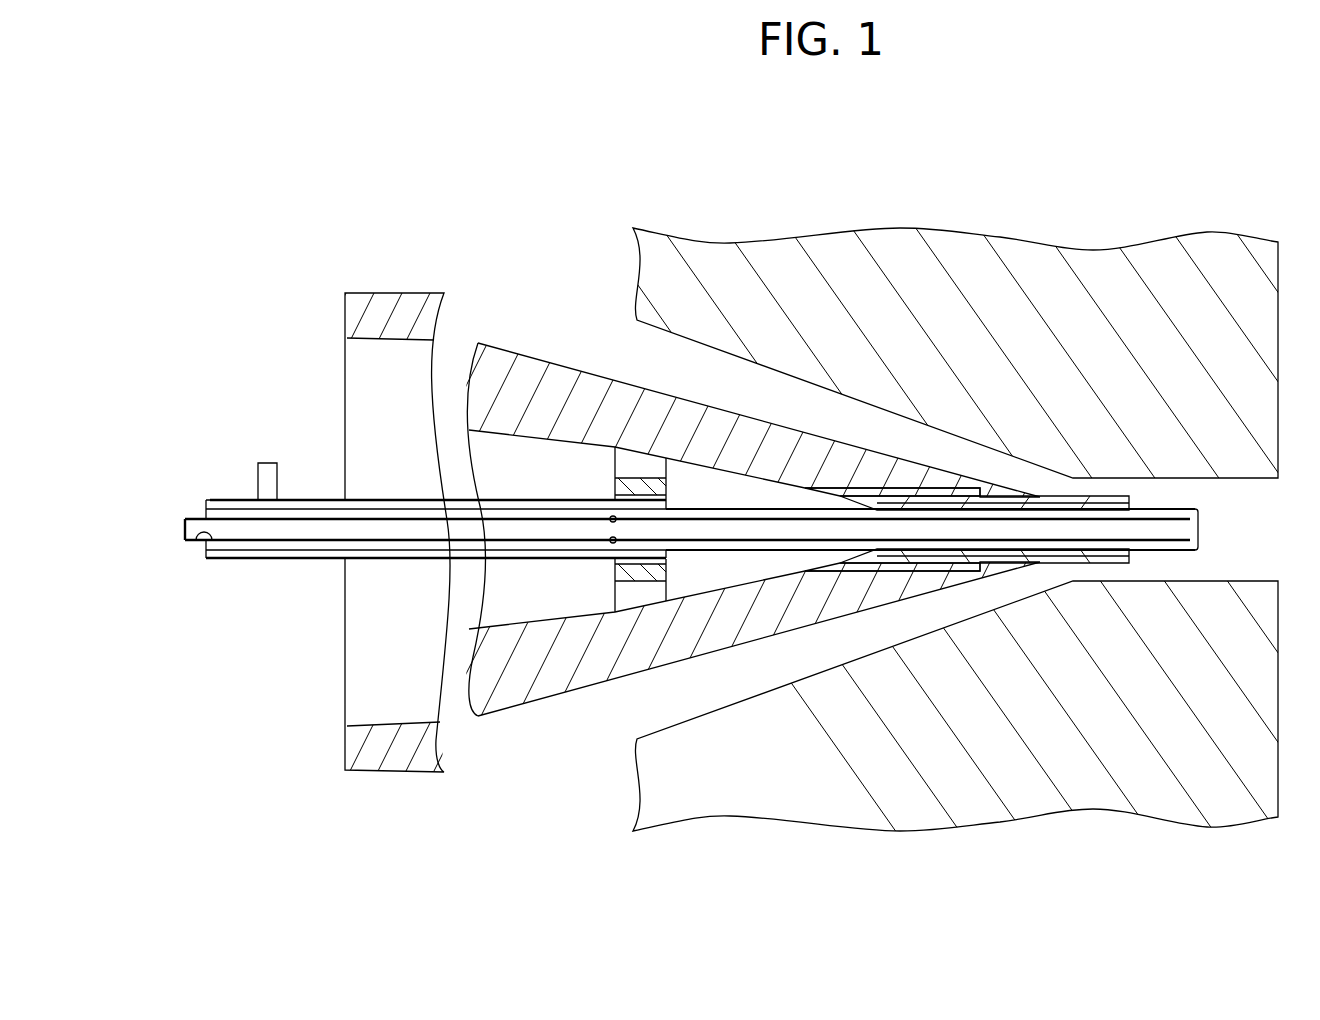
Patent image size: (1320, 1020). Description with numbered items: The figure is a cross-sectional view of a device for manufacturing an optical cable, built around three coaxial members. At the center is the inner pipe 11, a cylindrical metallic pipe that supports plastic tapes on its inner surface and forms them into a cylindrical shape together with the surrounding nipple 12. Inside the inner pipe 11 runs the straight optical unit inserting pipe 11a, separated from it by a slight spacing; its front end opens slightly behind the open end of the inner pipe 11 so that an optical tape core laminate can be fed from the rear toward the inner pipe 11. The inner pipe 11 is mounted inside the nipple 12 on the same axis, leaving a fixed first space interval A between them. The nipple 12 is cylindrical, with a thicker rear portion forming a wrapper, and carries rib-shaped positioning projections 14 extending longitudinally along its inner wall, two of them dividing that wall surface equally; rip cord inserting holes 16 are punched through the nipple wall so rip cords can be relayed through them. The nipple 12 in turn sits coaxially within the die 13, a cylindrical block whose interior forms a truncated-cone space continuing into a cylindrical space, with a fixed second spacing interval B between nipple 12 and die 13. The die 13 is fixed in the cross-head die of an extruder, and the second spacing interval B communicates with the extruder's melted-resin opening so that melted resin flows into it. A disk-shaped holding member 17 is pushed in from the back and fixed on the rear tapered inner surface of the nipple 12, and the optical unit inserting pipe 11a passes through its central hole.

The inner pipe 11 is at (1178, 550).
The optical unit inserting pipe 11a is at (628, 526).
The nipple 12 is at (753, 422).
The die 13 is at (1182, 252).
The positioning projection 14 is at (922, 503).
The rip cord inserting hole 16 is at (850, 487).
The holding member 17 is at (612, 600).
The first space interval A is at (1090, 500).
The second spacing interval B is at (683, 360).